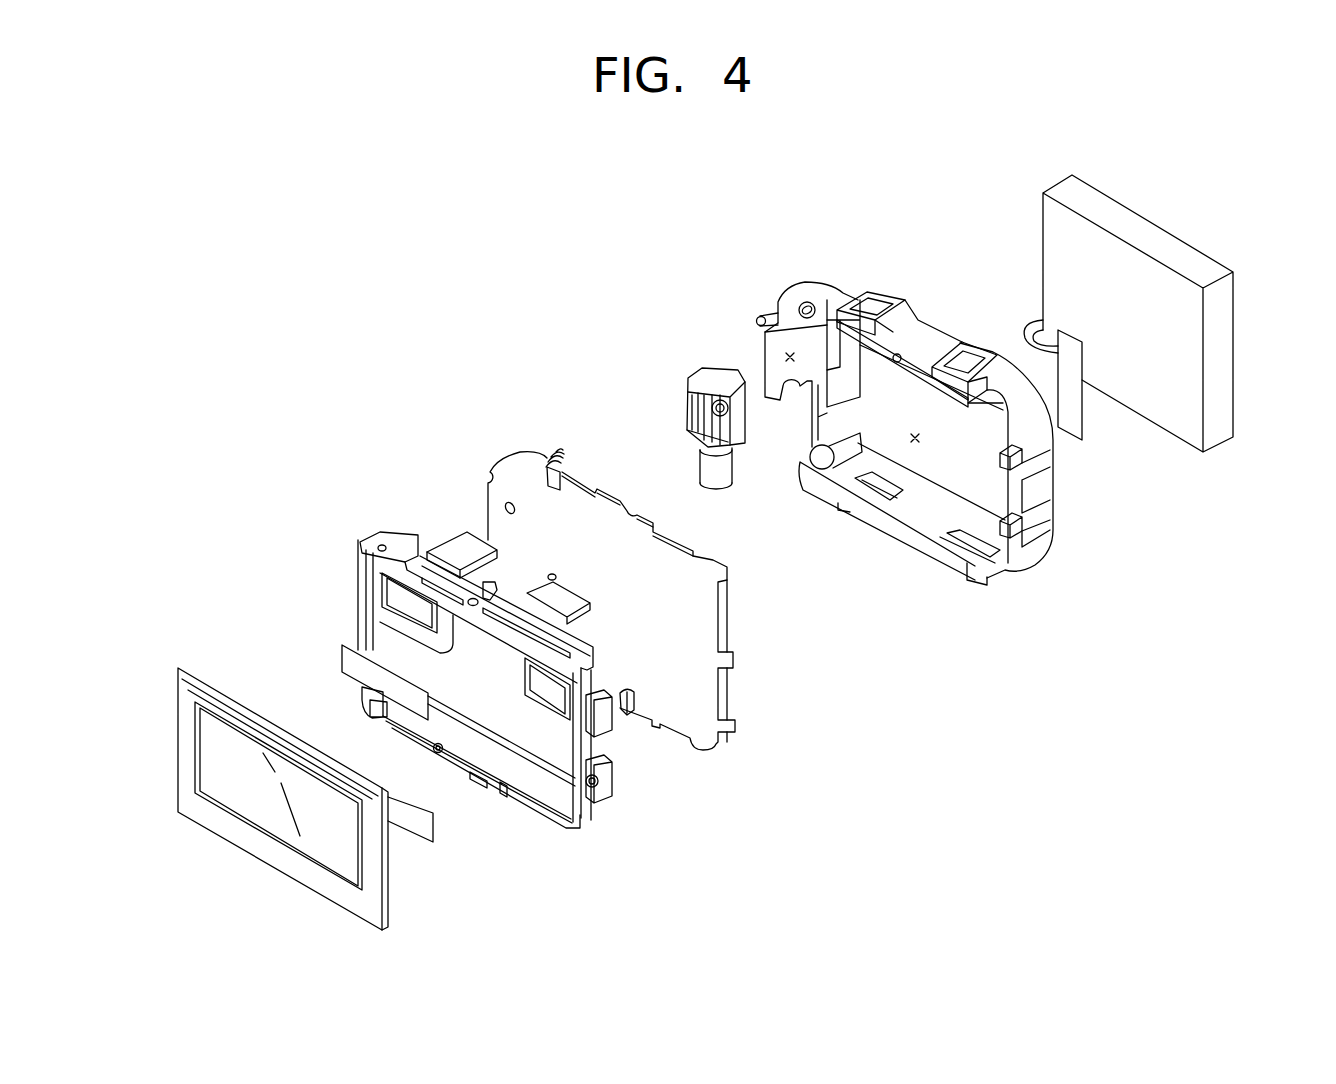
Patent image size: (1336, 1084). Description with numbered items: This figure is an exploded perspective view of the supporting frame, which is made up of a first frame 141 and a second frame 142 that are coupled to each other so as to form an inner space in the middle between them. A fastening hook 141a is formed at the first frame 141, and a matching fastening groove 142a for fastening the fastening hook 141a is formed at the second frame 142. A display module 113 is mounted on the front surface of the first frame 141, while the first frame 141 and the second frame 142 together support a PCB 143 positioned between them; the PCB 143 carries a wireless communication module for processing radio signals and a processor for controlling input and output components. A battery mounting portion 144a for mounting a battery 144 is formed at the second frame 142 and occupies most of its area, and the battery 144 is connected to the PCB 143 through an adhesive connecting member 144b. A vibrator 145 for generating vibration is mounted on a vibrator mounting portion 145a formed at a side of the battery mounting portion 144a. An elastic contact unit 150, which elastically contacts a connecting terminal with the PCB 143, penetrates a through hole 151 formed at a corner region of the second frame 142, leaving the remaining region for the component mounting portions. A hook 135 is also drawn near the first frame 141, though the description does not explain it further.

The display module 113 is at (327, 848).
The hook 135 is at (620, 712).
The first frame 141 is at (596, 810).
The fastening hook 141a is at (548, 597).
The second frame 142 is at (1038, 550).
The fastening groove 142a is at (967, 370).
The PCB 143 is at (693, 692).
The battery 144 is at (1143, 228).
The battery mounting portion 144a is at (915, 445).
The adhesive connecting member 144b is at (1074, 410).
The vibrator 145 is at (713, 372).
The vibrator mounting portion 145a is at (775, 355).
The elastic contact unit 150 is at (560, 448).
The through hole 151 is at (788, 294).